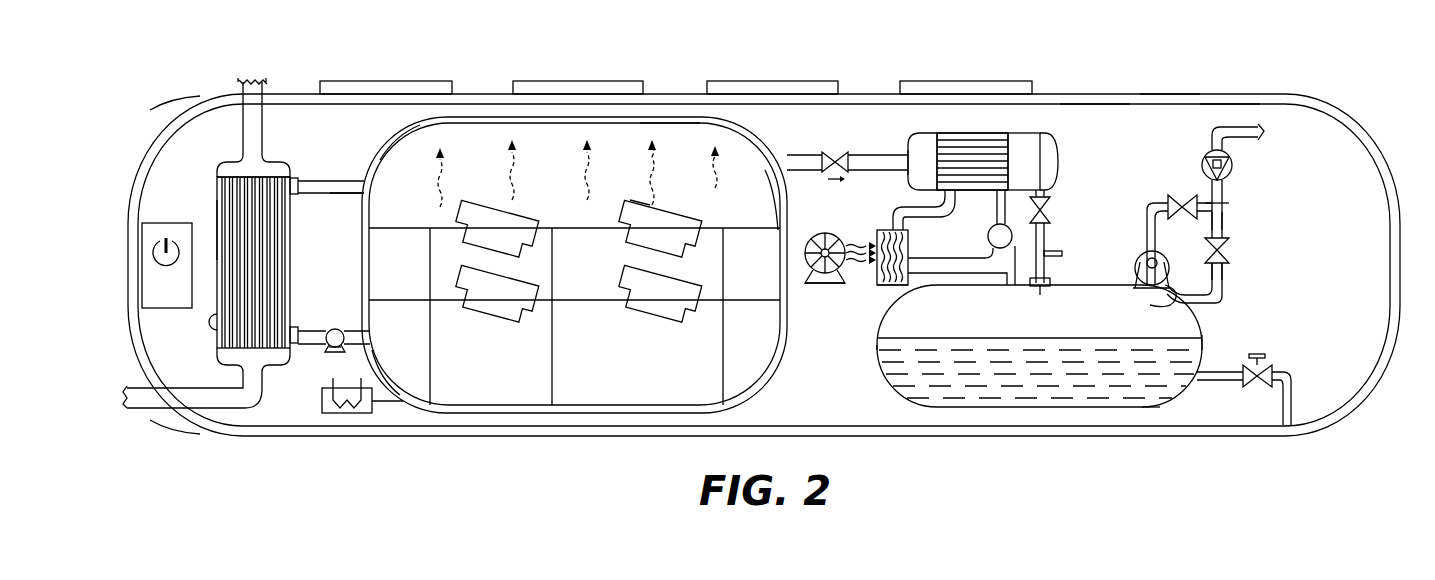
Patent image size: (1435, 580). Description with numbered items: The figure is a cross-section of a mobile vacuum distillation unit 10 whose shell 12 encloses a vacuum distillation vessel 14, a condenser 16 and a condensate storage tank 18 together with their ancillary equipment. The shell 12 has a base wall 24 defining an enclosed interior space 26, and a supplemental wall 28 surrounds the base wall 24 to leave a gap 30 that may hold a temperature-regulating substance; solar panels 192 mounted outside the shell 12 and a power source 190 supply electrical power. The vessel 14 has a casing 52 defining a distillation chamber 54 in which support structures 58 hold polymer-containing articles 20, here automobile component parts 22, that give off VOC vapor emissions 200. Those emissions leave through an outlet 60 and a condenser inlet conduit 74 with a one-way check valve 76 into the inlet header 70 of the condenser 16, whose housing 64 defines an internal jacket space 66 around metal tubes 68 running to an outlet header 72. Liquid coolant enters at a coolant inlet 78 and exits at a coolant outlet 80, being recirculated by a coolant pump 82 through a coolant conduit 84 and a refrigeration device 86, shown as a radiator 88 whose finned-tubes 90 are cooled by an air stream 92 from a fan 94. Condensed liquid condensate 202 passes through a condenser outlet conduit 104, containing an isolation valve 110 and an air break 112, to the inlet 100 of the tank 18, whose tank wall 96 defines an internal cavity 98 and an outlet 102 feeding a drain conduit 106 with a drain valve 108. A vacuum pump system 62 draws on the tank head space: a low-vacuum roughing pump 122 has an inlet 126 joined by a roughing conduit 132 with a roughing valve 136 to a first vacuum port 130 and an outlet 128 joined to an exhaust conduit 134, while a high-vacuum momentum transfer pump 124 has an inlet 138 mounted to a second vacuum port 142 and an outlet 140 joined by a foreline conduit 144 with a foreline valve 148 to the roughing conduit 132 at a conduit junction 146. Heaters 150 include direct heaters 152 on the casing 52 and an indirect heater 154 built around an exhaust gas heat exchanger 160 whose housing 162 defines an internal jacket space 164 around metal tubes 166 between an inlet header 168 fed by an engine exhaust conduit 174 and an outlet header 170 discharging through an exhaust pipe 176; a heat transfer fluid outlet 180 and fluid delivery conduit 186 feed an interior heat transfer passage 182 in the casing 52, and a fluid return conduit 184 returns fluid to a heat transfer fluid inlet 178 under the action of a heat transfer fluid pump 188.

The mobile vacuum distillation unit 10 is at (158, 96).
The shell 12 is at (1297, 90).
The vacuum distillation vessel 14 is at (727, 116).
The condenser 16 is at (924, 126).
The condensate storage tank 18 is at (870, 358).
The polymer-containing articles 20 is at (638, 195).
The polymer-containing automobile component parts 22 is at (483, 244).
The base wall 24 is at (1340, 112).
The enclosed interior space 26 is at (1092, 100).
The supplemental wall 28 is at (1230, 100).
The gap 30 is at (1165, 98).
The casing 52 is at (405, 138).
The distillation chamber 54 is at (670, 125).
The support structures 58 is at (553, 282).
The outlet 60 is at (762, 160).
The vacuum pump system 62 is at (1232, 203).
The housing 64 is at (963, 136).
The internal jacket space 66 is at (985, 140).
The metal tubes 68 is at (985, 172).
The inlet header 70 is at (908, 145).
The outlet header 72 is at (1058, 152).
The condenser inlet conduit 74 is at (803, 152).
The one-way check valve 76 is at (836, 150).
The coolant inlet 78 is at (993, 242).
The coolant outlet 80 is at (1024, 161).
The coolant pump 82 is at (1011, 283).
The coolant conduit 84 is at (893, 212).
The refrigeration device 86 is at (836, 285).
The radiator 88 is at (890, 286).
The finned-tubes 90 is at (908, 262).
The air stream 92 is at (852, 245).
The fan 94 is at (820, 233).
The tank wall 96 is at (1205, 342).
The internal cavity 98 is at (885, 370).
The inlet 100 is at (1045, 295).
The outlet 102 is at (1165, 390).
The condenser outlet conduit 104 is at (1050, 245).
The drain conduit 106 is at (1225, 370).
The drain valve 108 is at (1274, 375).
The isolation valve 110 is at (1052, 210).
The air break 112 is at (1064, 253).
The low-vacuum roughing pump 122 is at (1243, 175).
The high-vacuum momentum transfer pump 124 is at (1052, 282).
The inlet 126 is at (1228, 192).
The outlet 128 is at (1216, 127).
The first vacuum port 130 is at (1180, 303).
The roughing conduit 132 is at (1226, 282).
The exhaust conduit 134 is at (1242, 140).
The roughing valve 136 is at (1232, 253).
The inlet 138 is at (1170, 285).
The outlet 140 is at (1147, 212).
The second vacuum port 142 is at (1143, 290).
The foreline conduit 144 is at (1147, 212).
The conduit junction 146 is at (1228, 212).
The foreline valve 148 is at (1180, 193).
The heaters 150 is at (278, 153).
The direct heaters 152 is at (322, 400).
The indirect heater 154 is at (210, 180).
The exhaust gas heat exchanger 160 is at (207, 199).
The housing 162 is at (217, 222).
The internal jacket space 164 is at (226, 328).
The metal tubes 166 is at (265, 292).
The inlet header 168 is at (228, 352).
The outlet header 170 is at (296, 178).
The engine exhaust conduit 174 is at (193, 430).
The exhaust pipe 176 is at (262, 125).
The heat transfer fluid inlet 178 is at (333, 329).
The heat transfer fluid outlet 180 is at (300, 187).
The interior heat transfer passage 182 is at (455, 130).
The fluid return conduit 184 is at (385, 365).
The fluid delivery conduit 186 is at (356, 196).
The heat transfer fluid pump 188 is at (330, 350).
The power source 190 is at (153, 300).
The solar panel 192 is at (390, 80).
The VOC vapor emissions 200 is at (510, 168).
The liquid condensate 202 is at (1012, 387).